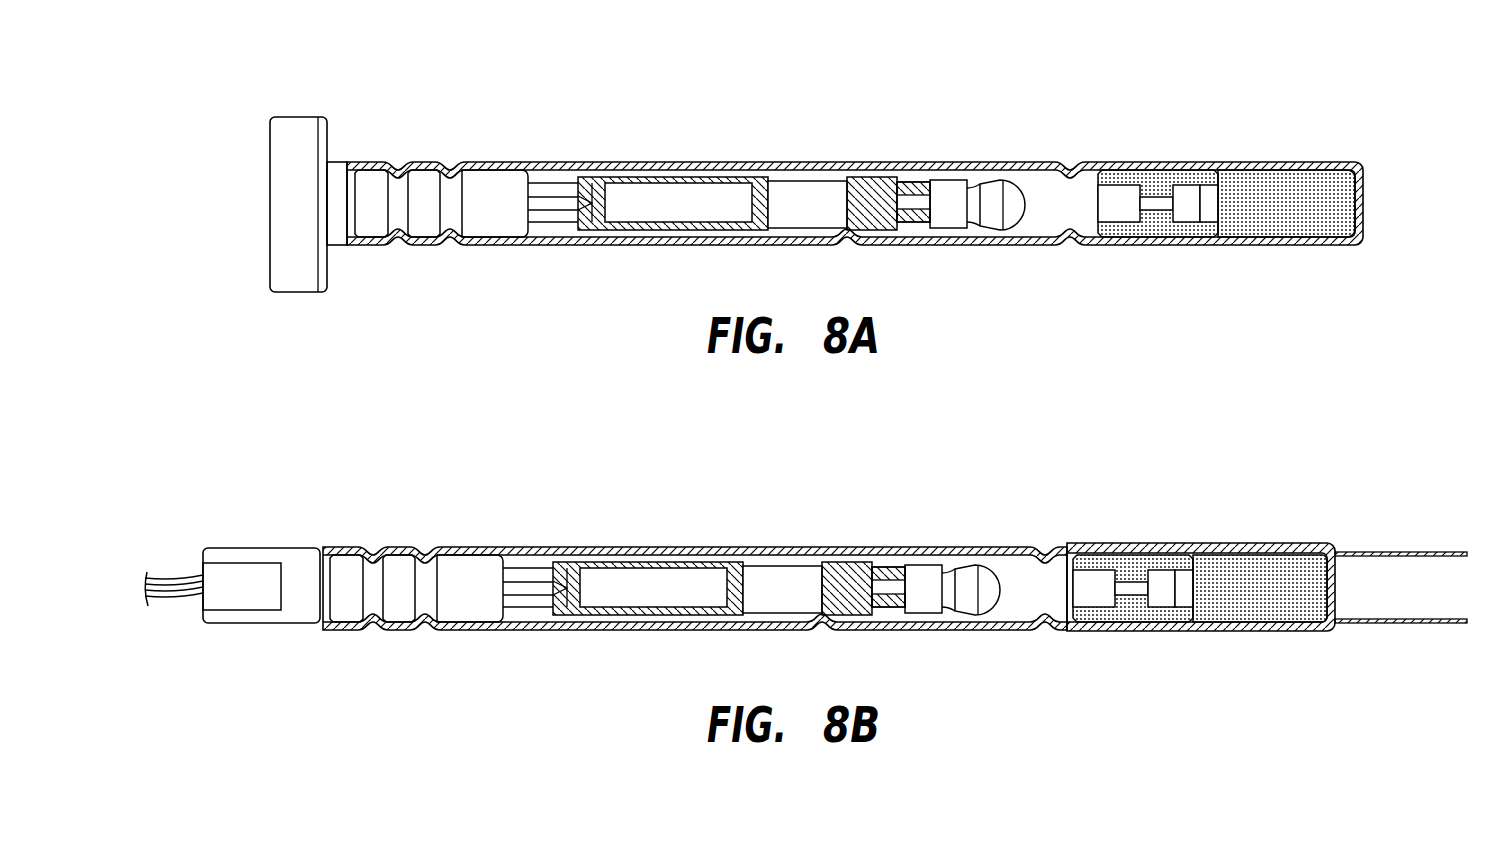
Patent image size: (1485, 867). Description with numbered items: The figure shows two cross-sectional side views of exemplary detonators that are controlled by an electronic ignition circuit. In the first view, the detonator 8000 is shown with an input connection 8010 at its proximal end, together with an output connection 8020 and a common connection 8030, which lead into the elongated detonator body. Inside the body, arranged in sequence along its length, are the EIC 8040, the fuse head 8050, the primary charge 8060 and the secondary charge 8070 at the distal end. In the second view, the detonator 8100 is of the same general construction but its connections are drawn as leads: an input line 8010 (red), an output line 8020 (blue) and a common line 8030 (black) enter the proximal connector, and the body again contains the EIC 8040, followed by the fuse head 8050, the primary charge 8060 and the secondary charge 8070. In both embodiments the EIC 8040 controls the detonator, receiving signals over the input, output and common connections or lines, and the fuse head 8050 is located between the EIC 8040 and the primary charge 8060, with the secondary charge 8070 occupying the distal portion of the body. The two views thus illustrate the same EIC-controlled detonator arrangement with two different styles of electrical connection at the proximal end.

In FIG. 8A, the detonator 8000 is at (316, 67).
In FIG. 8B, the detonator 8100 is at (812, 530).
In FIG. 8A, the input connection 8010 is at (270, 203).
In FIG. 8B, the input connection 8010 is at (247, 566).
In FIG. 8A, the output connection 8020 is at (328, 136).
In FIG. 8B, the output connection 8020 is at (151, 559).
In FIG. 8A, the common connection 8030 is at (428, 162).
In FIG. 8B, the common connection 8030 is at (324, 606).
In FIG. 8A, the electronic ignition circuit 8040 is at (803, 205).
In FIG. 8B, the electronic ignition circuit 8040 is at (768, 621).
In FIG. 8A, the fuse head 8050 is at (1012, 210).
In FIG. 8B, the fuse head 8050 is at (960, 620).
In FIG. 8A, the primary charge 8060 is at (1158, 228).
In FIG. 8B, the primary charge 8060 is at (1132, 620).
In FIG. 8A, the secondary charge 8070 is at (1275, 217).
In FIG. 8B, the secondary charge 8070 is at (1260, 618).